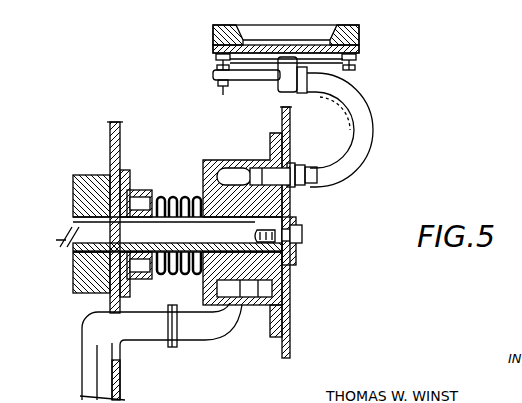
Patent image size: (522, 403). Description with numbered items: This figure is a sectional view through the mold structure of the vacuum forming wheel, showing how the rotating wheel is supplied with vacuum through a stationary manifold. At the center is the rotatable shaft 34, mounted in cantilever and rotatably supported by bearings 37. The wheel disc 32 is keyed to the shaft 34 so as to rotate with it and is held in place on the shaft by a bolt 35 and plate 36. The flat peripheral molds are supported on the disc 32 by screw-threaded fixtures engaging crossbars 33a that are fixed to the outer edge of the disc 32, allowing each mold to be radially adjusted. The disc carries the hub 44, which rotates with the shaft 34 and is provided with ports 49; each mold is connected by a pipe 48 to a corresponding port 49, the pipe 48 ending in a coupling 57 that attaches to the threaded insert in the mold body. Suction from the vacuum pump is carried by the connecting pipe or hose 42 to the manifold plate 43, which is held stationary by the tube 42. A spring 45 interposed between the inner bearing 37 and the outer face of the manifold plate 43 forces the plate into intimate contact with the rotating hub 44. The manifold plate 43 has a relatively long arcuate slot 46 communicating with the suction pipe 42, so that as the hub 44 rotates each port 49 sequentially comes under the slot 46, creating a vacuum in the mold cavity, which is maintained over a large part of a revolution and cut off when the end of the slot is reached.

The crossbars 33a is at (232, 84).
The coupling 57 is at (280, 82).
The pipe 48 is at (360, 104).
The hub 44 is at (293, 190).
The wheel disc 32 is at (291, 140).
The plate 36 is at (296, 262).
The manifold plate 43 is at (203, 175).
The arcuate slot 46 is at (230, 175).
The port 49 is at (262, 177).
The shaft 34 is at (187, 242).
The bolt 35 is at (302, 237).
The bearings 37 is at (141, 190).
The spring 45 is at (185, 277).
The pipe or hose 42 is at (88, 361).